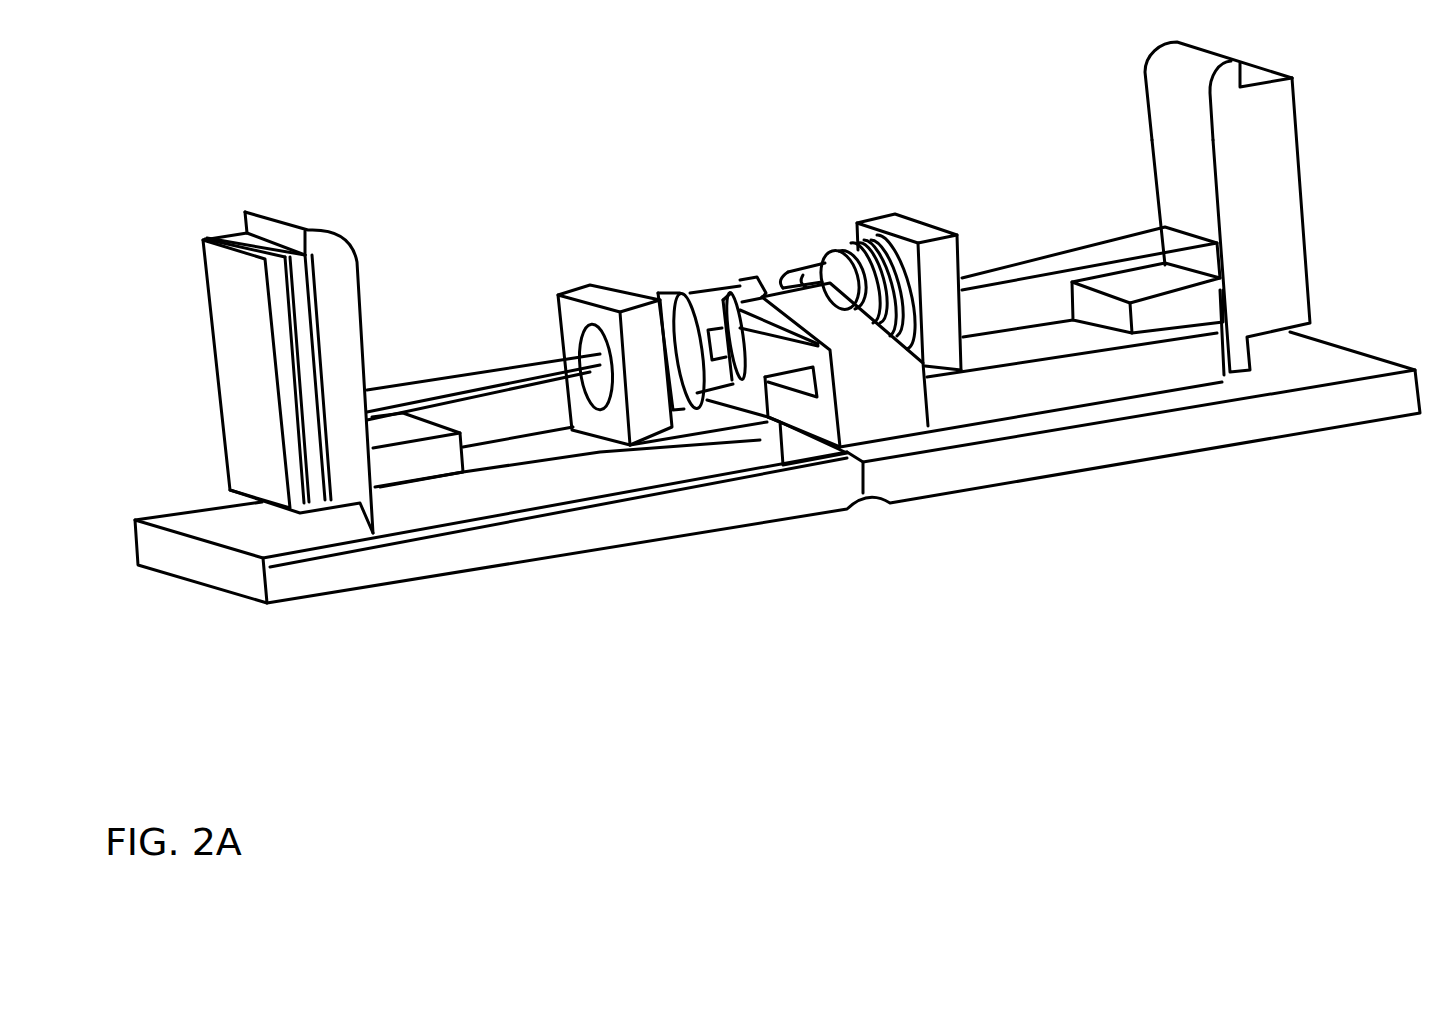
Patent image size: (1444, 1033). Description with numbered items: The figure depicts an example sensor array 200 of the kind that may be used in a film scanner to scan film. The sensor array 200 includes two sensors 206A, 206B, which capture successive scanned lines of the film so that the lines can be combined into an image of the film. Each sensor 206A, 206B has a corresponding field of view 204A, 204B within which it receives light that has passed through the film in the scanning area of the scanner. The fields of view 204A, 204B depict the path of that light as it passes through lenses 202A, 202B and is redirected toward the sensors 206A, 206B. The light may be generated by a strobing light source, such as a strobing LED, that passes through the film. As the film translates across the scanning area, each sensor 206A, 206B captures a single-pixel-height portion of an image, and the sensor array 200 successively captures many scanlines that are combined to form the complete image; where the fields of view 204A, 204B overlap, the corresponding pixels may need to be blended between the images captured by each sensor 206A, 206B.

The sensor array 200 is at (870, 655).
The lens 202A is at (645, 292).
The lens 202B is at (827, 240).
The field of view 204A is at (455, 375).
The field of view 204B is at (1085, 262).
The sensor 206A is at (213, 290).
The sensor 206B is at (1287, 127).